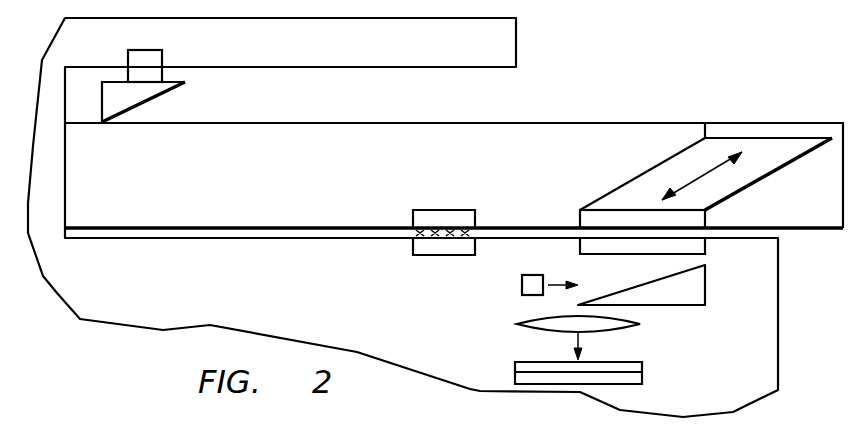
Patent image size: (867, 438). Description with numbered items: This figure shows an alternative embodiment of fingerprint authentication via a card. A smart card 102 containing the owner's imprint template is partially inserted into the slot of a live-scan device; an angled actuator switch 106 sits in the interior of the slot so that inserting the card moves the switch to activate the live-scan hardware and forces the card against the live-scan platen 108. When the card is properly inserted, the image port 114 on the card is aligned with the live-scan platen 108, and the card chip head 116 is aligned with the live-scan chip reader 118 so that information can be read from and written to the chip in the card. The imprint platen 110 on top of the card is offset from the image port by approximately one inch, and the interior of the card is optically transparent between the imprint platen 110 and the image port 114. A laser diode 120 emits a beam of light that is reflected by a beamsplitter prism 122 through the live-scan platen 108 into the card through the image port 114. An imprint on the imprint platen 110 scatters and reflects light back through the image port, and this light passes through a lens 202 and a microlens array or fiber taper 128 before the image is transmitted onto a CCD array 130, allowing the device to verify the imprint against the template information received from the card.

The card 102 is at (600, 118).
The actuator switch 106 is at (133, 58).
The live-scan platen 108 is at (706, 246).
The imprint platen 110 is at (770, 128).
The image port 114 is at (580, 215).
The card chip head 116 is at (413, 215).
The live-scan chip reader 118 is at (413, 247).
The laser diode 120 is at (522, 283).
The beamsplitter prism 122 is at (706, 283).
The microlens array or fiber taper 128 is at (643, 365).
The CCD array 130 is at (643, 380).
The lens 202 is at (623, 317).